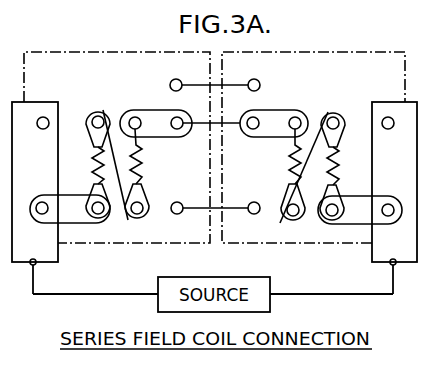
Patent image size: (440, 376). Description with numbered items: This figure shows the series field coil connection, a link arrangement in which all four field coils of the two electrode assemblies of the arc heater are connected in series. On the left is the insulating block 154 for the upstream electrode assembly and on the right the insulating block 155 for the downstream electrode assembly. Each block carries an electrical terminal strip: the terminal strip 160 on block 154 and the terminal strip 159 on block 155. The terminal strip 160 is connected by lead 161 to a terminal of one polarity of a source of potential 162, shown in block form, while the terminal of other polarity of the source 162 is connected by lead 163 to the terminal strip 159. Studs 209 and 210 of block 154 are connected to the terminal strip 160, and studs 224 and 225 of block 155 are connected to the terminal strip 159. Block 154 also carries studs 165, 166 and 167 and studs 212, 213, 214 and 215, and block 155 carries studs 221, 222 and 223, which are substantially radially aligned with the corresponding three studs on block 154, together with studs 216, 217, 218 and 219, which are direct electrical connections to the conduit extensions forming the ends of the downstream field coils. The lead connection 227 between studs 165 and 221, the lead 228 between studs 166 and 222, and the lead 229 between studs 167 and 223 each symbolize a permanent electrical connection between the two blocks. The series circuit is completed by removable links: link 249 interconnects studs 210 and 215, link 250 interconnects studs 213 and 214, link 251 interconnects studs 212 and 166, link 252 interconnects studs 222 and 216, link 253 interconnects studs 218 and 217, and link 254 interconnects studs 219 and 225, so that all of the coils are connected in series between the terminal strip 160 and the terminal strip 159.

The insulating block 154 is at (170, 243).
The insulating block 155 is at (305, 243).
The terminal strip 159 is at (411, 262).
The terminal strip 160 is at (29, 260).
The lead 161 is at (100, 296).
The source of potential 162 is at (272, 297).
The lead 163 is at (362, 296).
The stud 165 is at (172, 80).
The stud 166 is at (182, 129).
The stud 167 is at (180, 202).
The stud 209 is at (44, 117).
The stud 210 is at (34, 223).
The stud 212 is at (133, 110).
The stud 213 is at (103, 108).
The stud 214 is at (130, 214).
The stud 215 is at (96, 222).
The stud 216 is at (300, 108).
The stud 217 is at (340, 112).
The stud 218 is at (283, 223).
The stud 219 is at (329, 213).
The stud 221 is at (258, 80).
The stud 222 is at (254, 110).
The stud 223 is at (266, 197).
The stud 224 is at (389, 130).
The stud 225 is at (391, 218).
The lead connection 227 is at (236, 85).
The lead 228 is at (232, 128).
The lead 229 is at (237, 208).
The link 249 is at (63, 195).
The link 250 is at (148, 217).
The link 251 is at (156, 133).
The link 252 is at (275, 125).
The link 253 is at (318, 125).
The link 254 is at (363, 205).